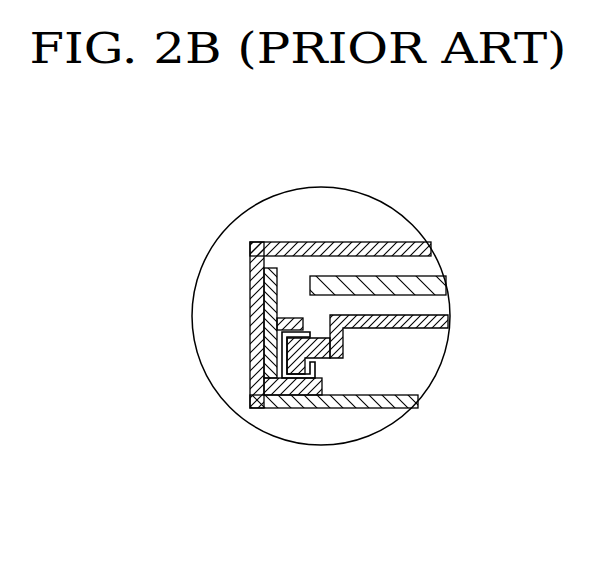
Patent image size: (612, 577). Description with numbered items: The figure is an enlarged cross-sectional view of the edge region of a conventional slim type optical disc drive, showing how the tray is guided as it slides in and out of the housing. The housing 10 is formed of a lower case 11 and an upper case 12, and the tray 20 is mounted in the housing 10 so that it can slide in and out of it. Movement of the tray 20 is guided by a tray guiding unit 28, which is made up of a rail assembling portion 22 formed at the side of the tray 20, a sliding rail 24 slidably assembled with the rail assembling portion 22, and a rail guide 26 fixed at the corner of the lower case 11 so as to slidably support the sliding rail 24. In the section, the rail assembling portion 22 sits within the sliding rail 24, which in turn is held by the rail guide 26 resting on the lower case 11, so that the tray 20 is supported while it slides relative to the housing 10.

The housing 10 is at (128, 277).
The lower case 11 is at (252, 347).
The upper case 12 is at (252, 277).
The tray 20 is at (393, 328).
The rail assembling portion 22 is at (303, 366).
The sliding rail 24 is at (291, 377).
The rail guide 26 is at (265, 393).
The tray guiding unit 28 is at (227, 521).